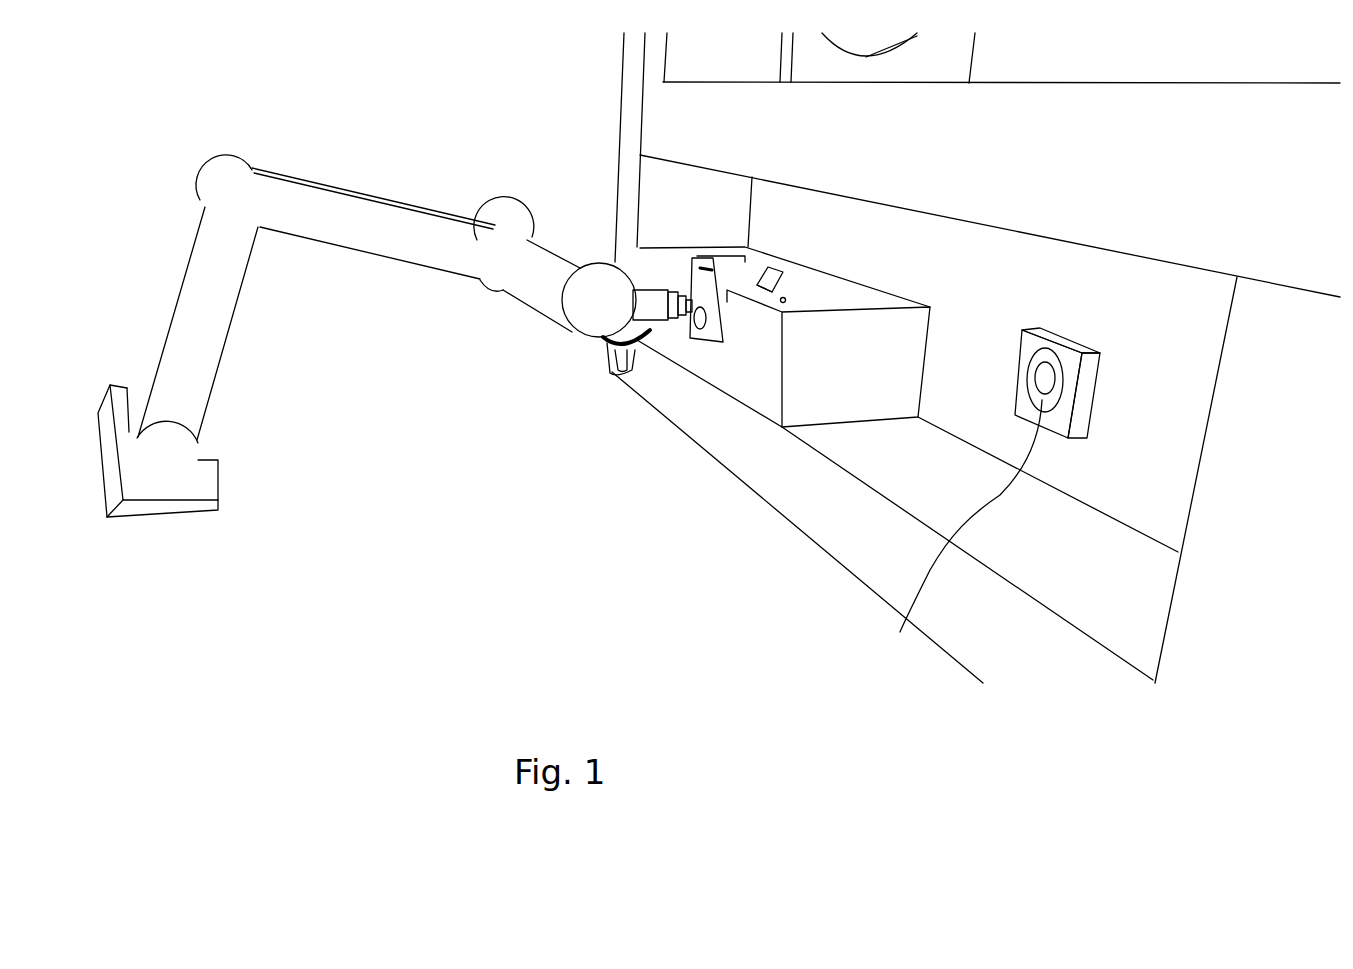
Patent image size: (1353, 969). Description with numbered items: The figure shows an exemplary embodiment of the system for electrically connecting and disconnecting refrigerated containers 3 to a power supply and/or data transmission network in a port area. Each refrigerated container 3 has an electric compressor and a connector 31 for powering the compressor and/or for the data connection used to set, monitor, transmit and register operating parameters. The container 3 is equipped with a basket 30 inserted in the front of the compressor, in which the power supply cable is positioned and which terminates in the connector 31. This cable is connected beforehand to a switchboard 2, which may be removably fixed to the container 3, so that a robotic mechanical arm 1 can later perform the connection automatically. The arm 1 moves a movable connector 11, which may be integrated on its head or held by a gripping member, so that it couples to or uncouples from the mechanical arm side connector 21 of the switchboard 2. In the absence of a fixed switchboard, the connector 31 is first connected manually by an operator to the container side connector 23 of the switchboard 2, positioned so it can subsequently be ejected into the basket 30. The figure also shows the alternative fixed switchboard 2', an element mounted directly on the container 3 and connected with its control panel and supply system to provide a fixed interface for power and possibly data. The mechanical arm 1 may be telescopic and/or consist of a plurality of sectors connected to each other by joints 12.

The robotic mechanical arm 1 is at (362, 193).
The joints 12 is at (233, 158).
The movable connector 11 is at (682, 318).
The switchboard 2 is at (678, 362).
The fixed switchboard 2' is at (1146, 398).
The mechanical arm side connector 21 is at (694, 308).
The container side connector 23 is at (780, 273).
The refrigerated container 3 is at (623, 91).
The basket 30 is at (827, 413).
The connector 31 is at (779, 286).